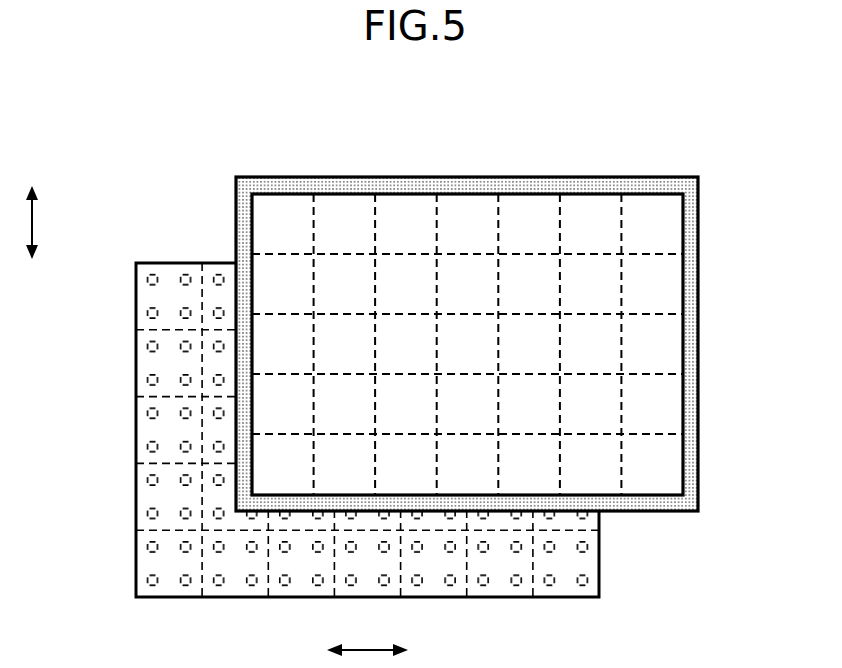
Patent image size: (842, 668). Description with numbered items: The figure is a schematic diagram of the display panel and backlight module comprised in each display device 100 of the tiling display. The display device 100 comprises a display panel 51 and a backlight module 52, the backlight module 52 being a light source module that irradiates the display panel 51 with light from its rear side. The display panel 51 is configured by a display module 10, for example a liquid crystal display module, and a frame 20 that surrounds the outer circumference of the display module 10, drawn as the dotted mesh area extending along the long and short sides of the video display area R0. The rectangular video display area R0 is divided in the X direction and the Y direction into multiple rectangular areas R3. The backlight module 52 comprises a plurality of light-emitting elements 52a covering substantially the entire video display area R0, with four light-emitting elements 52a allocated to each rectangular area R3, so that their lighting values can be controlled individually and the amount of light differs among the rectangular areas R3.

The display device 100 is at (178, 128).
The backlight module 52 is at (153, 262).
The light-emitting elements 52a is at (147, 281).
The display panel 51 is at (519, 344).
The frame 20 is at (689, 336).
The display module 10 is at (655, 369).
The rectangular areas R3 is at (589, 208).
The video display area R0 is at (690, 446).